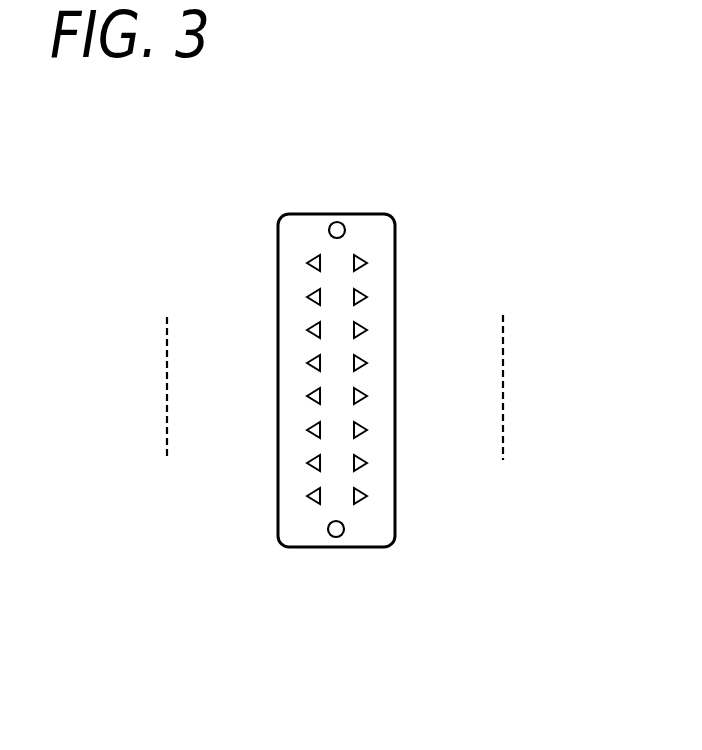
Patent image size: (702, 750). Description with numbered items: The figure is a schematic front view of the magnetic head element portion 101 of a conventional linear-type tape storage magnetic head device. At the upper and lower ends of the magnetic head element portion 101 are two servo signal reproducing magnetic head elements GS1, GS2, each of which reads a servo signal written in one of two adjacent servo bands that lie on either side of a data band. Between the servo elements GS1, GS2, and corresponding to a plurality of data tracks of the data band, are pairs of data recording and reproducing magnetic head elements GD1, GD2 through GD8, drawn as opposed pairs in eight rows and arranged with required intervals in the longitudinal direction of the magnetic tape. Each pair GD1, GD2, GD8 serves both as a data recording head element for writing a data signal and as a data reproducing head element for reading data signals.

The magnetic head element portion 101 is at (395, 395).
The servo signal reproducing magnetic head element GS1 is at (337, 222).
The servo signal reproducing magnetic head element GS2 is at (334, 537).
The data recording and reproducing magnetic head element GD1 is at (320, 263).
The data recording and reproducing magnetic head element GD2 is at (320, 297).
The data recording and reproducing magnetic head element GD8 is at (320, 496).